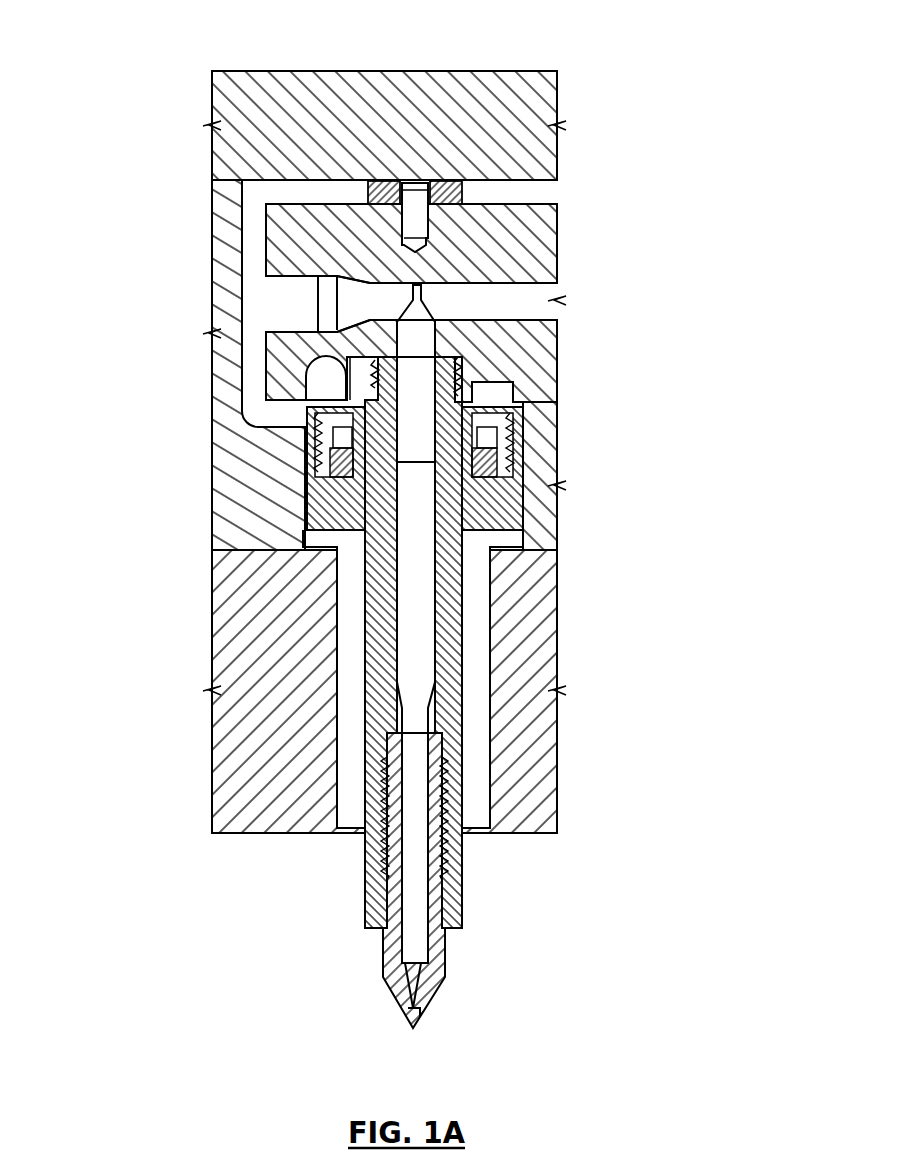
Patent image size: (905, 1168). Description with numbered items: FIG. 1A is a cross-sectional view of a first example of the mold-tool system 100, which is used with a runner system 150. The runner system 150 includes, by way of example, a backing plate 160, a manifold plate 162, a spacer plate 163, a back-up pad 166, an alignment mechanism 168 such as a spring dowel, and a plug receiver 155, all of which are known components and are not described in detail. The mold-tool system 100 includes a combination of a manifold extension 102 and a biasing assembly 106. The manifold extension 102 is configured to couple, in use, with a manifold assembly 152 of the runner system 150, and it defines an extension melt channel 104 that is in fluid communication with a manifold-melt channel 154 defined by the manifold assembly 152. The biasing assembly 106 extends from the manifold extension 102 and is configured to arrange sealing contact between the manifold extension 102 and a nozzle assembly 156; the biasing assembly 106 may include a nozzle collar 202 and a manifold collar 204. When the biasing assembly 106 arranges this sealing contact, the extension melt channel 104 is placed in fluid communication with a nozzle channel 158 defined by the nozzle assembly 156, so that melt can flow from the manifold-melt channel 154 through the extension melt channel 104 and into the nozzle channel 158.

The mold-tool system 100 is at (196, 433).
The manifold extension 102 is at (372, 452).
The extension melt channel 104 is at (452, 373).
The biasing assembly 106 is at (229, 373).
The runner system 150 is at (466, 422).
The manifold assembly 152 is at (545, 238).
The manifold-melt channel 154 is at (537, 295).
The plug receiver 155 is at (280, 292).
The nozzle assembly 156 is at (448, 657).
The nozzle channel 158 is at (417, 587).
The backing plate 160 is at (548, 100).
The manifold plate 162 is at (545, 508).
The spacer plate 163 is at (540, 795).
The back-up pad 166 is at (380, 188).
The alignment mechanism 168 is at (414, 188).
The nozzle collar 202 is at (300, 422).
The manifold collar 204 is at (316, 392).